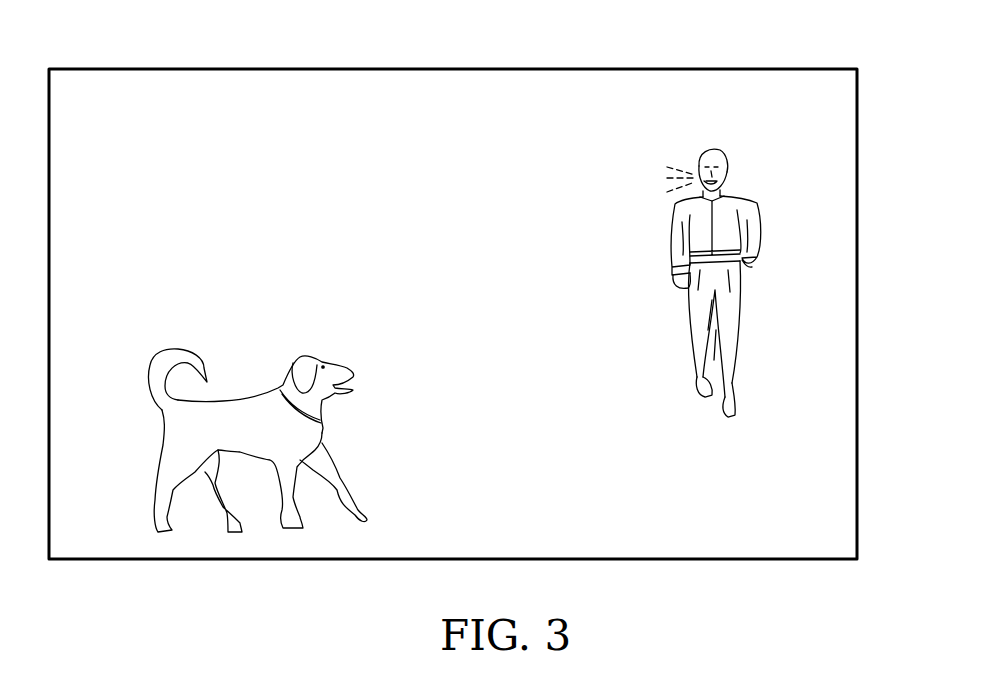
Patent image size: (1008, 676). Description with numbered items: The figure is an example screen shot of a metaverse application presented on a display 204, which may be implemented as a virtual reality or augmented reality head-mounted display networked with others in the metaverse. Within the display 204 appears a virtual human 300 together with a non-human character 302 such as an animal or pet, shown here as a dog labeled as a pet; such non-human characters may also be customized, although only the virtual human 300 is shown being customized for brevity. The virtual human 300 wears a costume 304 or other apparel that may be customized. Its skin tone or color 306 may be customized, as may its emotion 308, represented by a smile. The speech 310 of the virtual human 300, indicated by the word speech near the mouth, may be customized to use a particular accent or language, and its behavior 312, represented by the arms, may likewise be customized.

The display 204 is at (668, 67).
The virtual human 300 is at (469, 116).
The non-human character 302 is at (303, 357).
The costume 304 is at (660, 274).
The skin tone 306 is at (700, 170).
The emotion 308 is at (728, 188).
The speech 310 is at (588, 177).
The behavior 312 is at (670, 282).